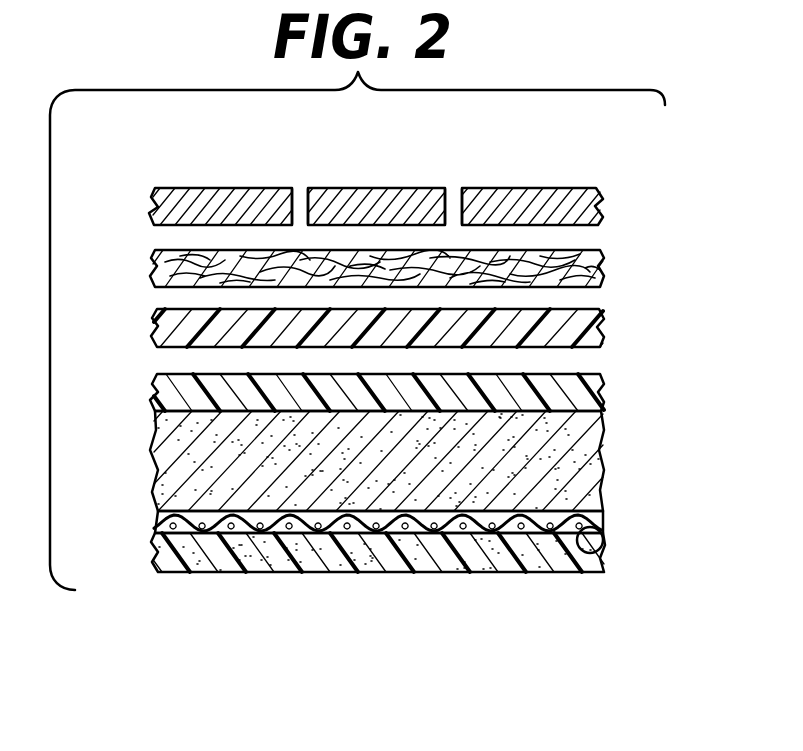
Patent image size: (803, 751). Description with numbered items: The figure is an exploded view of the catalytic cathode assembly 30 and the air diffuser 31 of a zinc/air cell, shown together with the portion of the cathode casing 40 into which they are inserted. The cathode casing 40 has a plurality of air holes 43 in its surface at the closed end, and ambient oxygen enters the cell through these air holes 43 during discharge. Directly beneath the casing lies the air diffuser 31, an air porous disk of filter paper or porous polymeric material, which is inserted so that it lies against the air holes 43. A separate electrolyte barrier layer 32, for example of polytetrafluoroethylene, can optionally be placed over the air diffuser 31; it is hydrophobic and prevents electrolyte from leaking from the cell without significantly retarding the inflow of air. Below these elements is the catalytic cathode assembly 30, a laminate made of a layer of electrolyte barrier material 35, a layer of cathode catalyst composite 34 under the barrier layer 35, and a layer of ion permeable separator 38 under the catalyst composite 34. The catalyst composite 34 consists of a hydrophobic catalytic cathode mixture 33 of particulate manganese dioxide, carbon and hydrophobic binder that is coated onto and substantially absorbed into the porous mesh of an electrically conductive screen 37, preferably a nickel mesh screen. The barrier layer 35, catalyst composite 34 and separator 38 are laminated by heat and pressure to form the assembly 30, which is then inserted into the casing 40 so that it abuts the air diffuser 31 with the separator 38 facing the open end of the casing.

The catalytic cathode assembly 30 is at (133, 373).
The air diffuser 31 is at (593, 270).
The electrolyte barrier layer 32 is at (595, 328).
The catalytic cathode mixture 33 is at (590, 440).
The catalytic cathode composite 34 is at (613, 470).
The electrolyte barrier layer 35 is at (598, 395).
The electrically conductive screen 37 is at (603, 550).
The ion permeable separator 38 is at (562, 572).
The cathode casing 40 is at (593, 203).
The air holes 43 is at (456, 194).